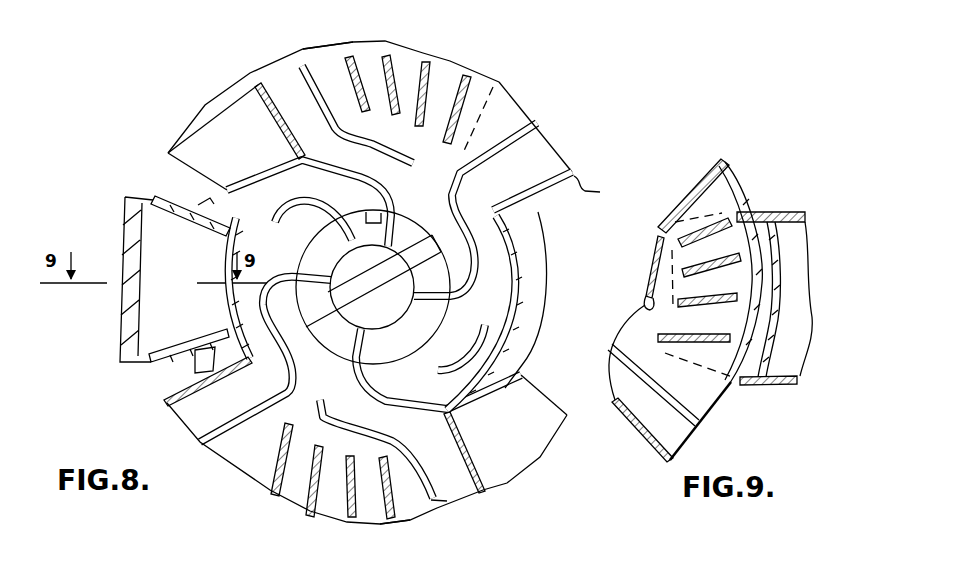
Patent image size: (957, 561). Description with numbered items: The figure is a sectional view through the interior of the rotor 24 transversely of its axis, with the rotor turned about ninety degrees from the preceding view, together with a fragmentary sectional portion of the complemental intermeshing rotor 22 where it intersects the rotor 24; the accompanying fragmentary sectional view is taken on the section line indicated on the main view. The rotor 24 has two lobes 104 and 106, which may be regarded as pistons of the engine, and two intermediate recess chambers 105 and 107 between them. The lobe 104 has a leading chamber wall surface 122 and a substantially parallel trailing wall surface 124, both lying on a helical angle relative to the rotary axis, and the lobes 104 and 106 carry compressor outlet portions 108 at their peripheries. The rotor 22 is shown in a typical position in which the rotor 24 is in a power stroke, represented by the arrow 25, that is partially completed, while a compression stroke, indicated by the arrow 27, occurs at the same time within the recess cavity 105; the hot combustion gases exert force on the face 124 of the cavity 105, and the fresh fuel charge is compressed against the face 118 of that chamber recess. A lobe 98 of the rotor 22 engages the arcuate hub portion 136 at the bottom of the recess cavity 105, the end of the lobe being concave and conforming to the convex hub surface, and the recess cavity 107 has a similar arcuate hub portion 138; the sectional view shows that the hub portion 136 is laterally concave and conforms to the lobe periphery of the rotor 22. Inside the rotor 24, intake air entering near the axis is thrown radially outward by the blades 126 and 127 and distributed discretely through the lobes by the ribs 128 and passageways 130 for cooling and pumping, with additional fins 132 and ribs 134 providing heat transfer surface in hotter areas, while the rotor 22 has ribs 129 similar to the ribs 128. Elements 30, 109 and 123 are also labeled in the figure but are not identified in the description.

In FIG. 8, the rotor 22 is at (147, 241).
In FIG. 9, the rotor 22 is at (740, 230).
In FIG. 8, the rotor 24 is at (522, 97).
In FIG. 9, the rotor 24 is at (796, 280).
In FIG. 8, the power stroke arrow 25 is at (202, 205).
In FIG. 8, the compression stroke arrow 27 is at (202, 361).
In FIG. 8, the curved arm 30 is at (335, 143).
In FIG. 8, the lobe 98 is at (143, 200).
In FIG. 8, the lobe 104 is at (378, 37).
In FIG. 8, the recess chamber 105 is at (180, 192).
In FIG. 8, the lobe 106 is at (330, 530).
In FIG. 8, the recess chamber 107 is at (553, 295).
In FIG. 8, the compressor outlet portion 108 is at (342, 72).
In FIG. 8, the web between slots 109 is at (398, 526).
In FIG. 8, the face 118 is at (200, 383).
In FIG. 8, the leading chamber wall surface 122 is at (602, 186).
In FIG. 8, the lower right plate 123 is at (514, 441).
In FIG. 8, the trailing wall surface 124 is at (248, 138).
In FIG. 8, the blade 126 is at (368, 218).
In FIG. 8, the blade 127 is at (467, 78).
In FIG. 8, the rib 128 is at (388, 212).
In FIG. 8, the rib 129 is at (127, 217).
In FIG. 9, the rib 129 is at (625, 300).
In FIG. 8, the passageway 130 is at (398, 420).
In FIG. 8, the fin 132 is at (277, 80).
In FIG. 8, the rib 134 is at (458, 494).
In FIG. 8, the arcuate hub portion 136 is at (227, 263).
In FIG. 9, the arcuate hub portion 136 is at (772, 293).
In FIG. 8, the arcuate hub portion 138 is at (520, 262).